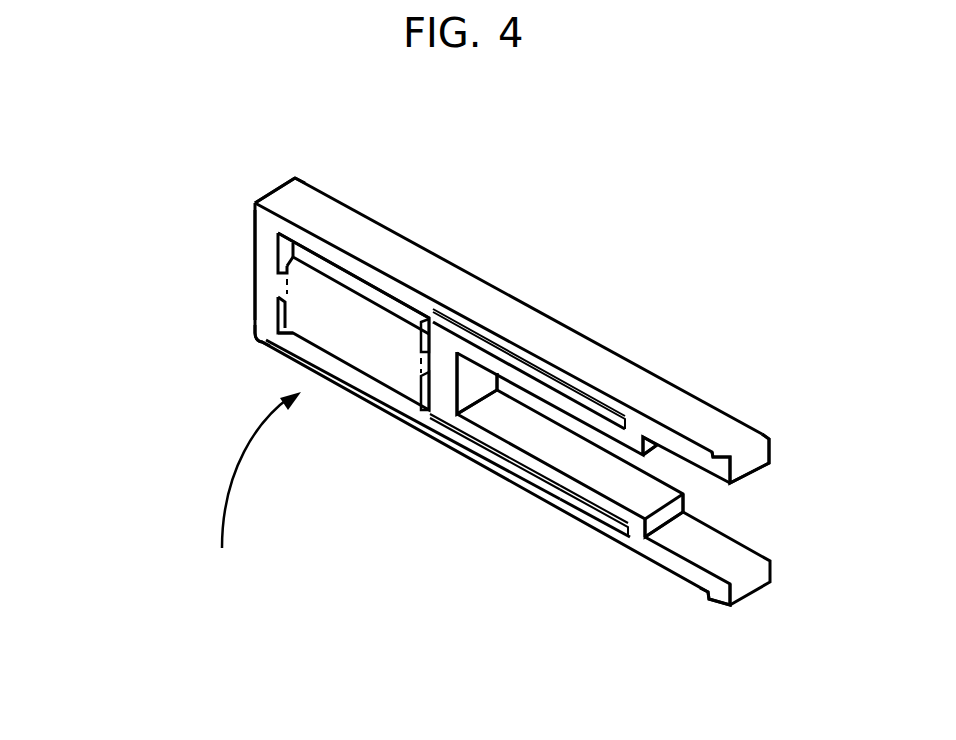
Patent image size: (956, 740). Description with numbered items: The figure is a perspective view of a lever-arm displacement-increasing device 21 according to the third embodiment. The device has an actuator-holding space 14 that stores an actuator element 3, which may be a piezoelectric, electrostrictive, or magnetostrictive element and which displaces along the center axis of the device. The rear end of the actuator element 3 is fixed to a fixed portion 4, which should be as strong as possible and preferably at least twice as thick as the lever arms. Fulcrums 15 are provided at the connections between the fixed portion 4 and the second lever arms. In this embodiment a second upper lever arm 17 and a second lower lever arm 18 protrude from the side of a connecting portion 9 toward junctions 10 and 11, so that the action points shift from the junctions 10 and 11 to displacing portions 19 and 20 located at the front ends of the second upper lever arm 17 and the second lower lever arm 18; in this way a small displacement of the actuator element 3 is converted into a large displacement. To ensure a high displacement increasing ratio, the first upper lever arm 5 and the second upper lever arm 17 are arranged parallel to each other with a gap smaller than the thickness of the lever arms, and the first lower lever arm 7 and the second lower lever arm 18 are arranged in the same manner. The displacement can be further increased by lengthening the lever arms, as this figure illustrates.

The actuator element 3 is at (392, 323).
The fixed portion 4 is at (262, 270).
The first upper lever arm 5 is at (587, 392).
The first lower lever arm 7 is at (568, 483).
The connecting portion 9 is at (428, 393).
The junction 10 is at (632, 433).
The junction 11 is at (635, 528).
The actuator-holding space 14 is at (290, 330).
The fulcrum 15 is at (267, 218).
The second upper lever arm 17 is at (528, 365).
The second lower lever arm 18 is at (602, 520).
The displacing portion 19 is at (718, 465).
The displacing portion 20 is at (722, 600).
The lever-arm displacement-increasing device 21 is at (240, 582).